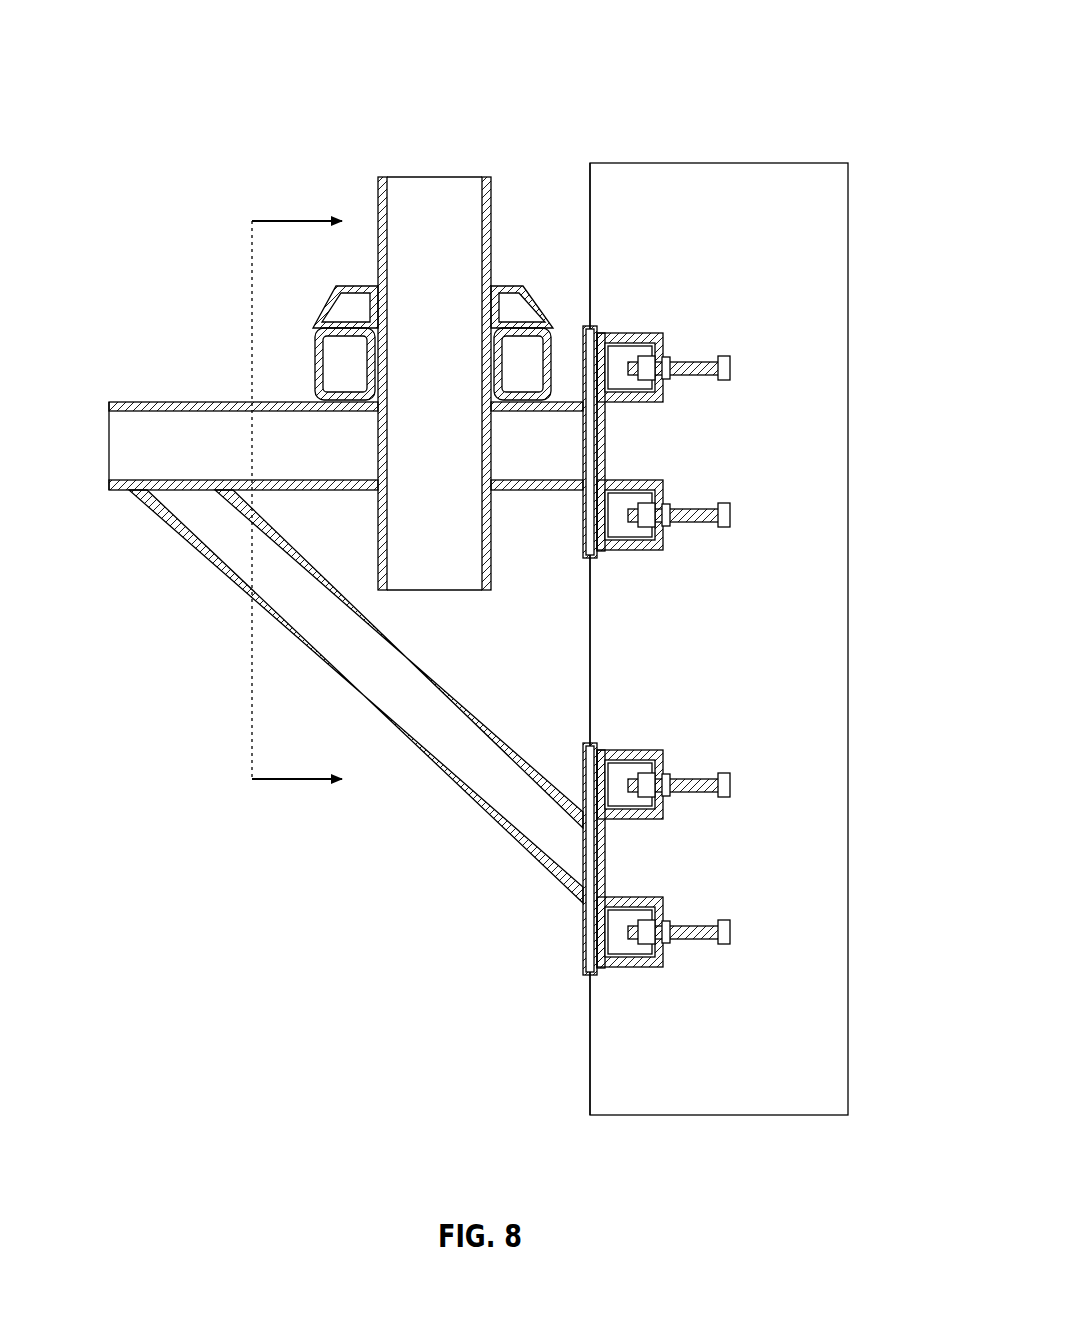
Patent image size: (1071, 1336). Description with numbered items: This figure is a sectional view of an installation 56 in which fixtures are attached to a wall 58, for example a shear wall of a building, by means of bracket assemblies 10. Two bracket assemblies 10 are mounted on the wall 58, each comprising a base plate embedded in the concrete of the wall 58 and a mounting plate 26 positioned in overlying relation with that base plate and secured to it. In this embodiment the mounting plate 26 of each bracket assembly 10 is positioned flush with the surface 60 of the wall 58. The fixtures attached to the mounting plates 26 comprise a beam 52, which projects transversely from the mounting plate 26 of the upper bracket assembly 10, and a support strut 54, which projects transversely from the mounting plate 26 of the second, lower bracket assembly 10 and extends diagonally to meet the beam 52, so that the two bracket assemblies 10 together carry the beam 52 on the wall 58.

The installation 56 is at (124, 56).
The beam 52 is at (135, 440).
The support strut 54 is at (478, 780).
The mounting plate 26 is at (583, 947).
The bracket assembly 10 is at (752, 438).
The wall 58 is at (848, 1023).
The surface 60 is at (590, 1072).